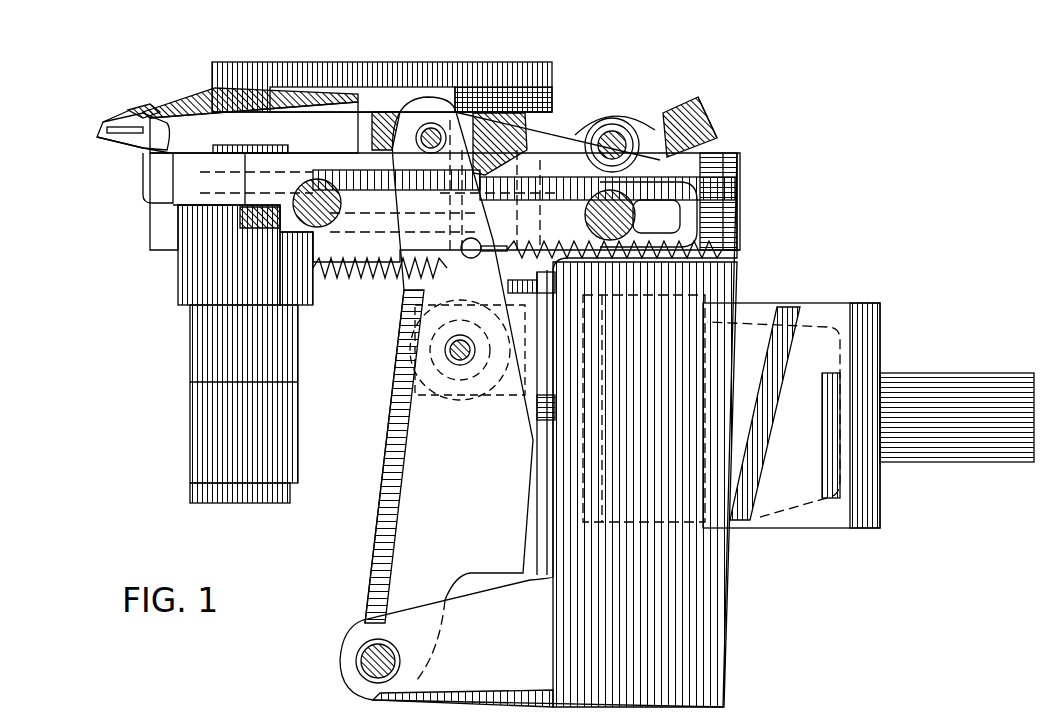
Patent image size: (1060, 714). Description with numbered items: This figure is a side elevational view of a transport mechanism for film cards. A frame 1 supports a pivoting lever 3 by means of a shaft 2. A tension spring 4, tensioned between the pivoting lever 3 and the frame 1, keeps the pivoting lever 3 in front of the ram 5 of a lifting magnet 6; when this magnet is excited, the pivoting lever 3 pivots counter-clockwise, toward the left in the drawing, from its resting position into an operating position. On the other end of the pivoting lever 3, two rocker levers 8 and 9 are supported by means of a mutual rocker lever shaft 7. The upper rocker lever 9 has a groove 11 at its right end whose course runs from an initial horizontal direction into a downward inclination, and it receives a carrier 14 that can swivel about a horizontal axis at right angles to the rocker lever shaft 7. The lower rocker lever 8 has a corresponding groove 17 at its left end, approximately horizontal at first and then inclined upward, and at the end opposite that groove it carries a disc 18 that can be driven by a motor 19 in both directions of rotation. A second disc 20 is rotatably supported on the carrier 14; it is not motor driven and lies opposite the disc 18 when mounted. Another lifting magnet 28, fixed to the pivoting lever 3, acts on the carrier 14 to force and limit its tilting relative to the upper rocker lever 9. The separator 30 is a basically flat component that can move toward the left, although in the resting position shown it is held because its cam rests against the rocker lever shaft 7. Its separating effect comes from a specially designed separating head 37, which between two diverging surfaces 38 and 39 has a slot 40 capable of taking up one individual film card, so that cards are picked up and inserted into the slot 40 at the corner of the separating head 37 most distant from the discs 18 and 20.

The frame 1 is at (705, 636).
The shaft 2 is at (372, 652).
The pivoting lever 3 is at (405, 455).
The tension spring 4 is at (650, 262).
The ram 5 is at (547, 425).
The lifting magnet 6 is at (800, 303).
The rocker lever shaft 7 is at (431, 128).
The lower rocker lever 8 is at (675, 118).
The upper rocker lever 9 is at (560, 125).
The groove 11 is at (725, 190).
The carrier 14 is at (395, 62).
The groove 17 is at (712, 112).
The disc 18 is at (168, 200).
The motor 19 is at (210, 455).
The second disc 20 is at (190, 100).
The lifting magnet 28 is at (412, 346).
The separator 30 is at (127, 143).
The separating head 37 is at (148, 104).
The diverging surface 38 is at (110, 118).
The diverging surface 39 is at (105, 142).
The slot 40 is at (100, 127).